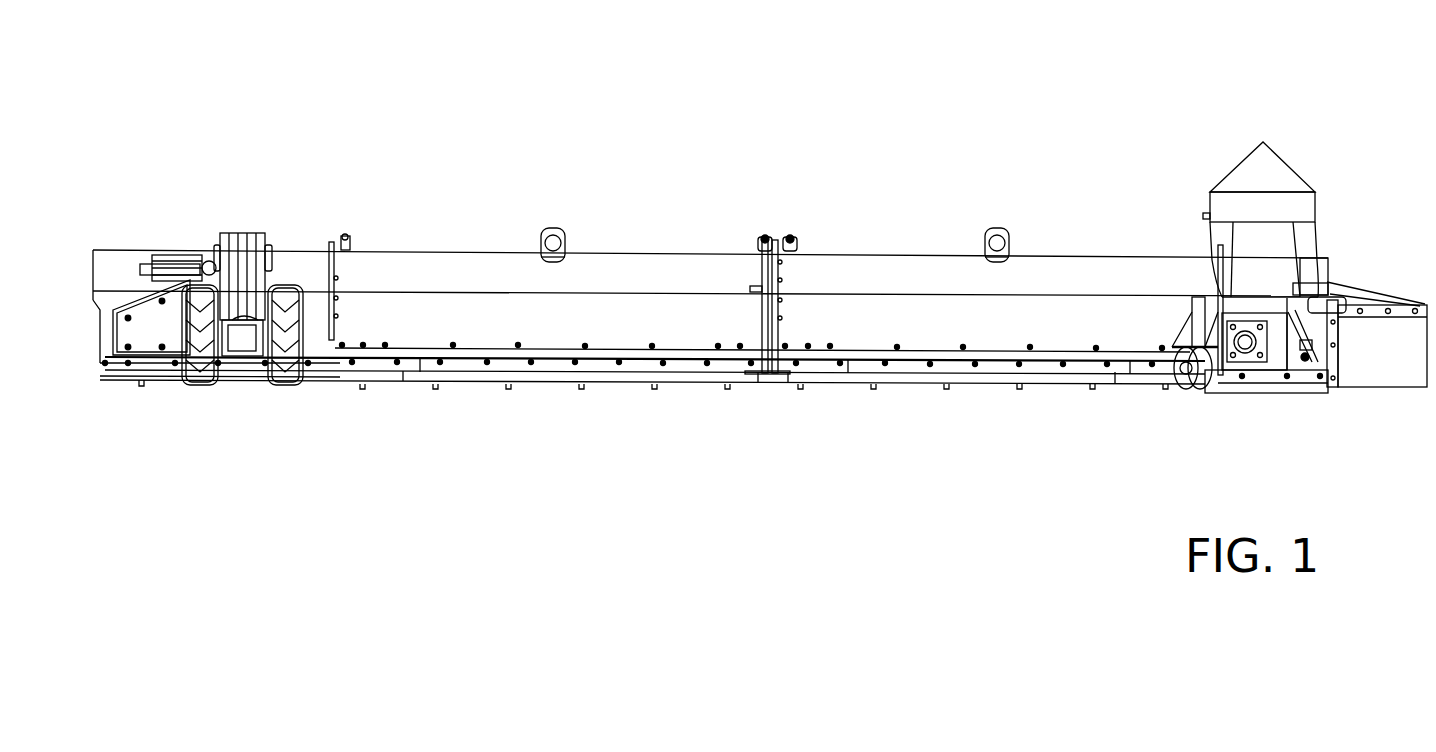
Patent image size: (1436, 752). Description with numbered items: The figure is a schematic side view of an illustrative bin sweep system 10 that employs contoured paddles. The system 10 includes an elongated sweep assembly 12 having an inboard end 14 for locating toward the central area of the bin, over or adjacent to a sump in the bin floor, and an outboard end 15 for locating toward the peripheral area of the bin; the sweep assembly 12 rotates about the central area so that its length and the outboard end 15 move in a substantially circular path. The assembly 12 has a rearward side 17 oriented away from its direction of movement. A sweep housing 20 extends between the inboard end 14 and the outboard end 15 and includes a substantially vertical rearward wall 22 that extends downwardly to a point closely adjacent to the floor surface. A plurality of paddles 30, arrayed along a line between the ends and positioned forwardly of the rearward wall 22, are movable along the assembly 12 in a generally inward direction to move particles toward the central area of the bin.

The system 10 is at (1265, 95).
The sweep assembly 12 is at (840, 218).
The inboard end 14 is at (1288, 413).
The outboard end 15 is at (112, 228).
The rearward side 17 is at (650, 280).
The sweep housing 20 is at (455, 268).
The rearward wall 22 is at (535, 372).
The paddles 30 is at (651, 380).